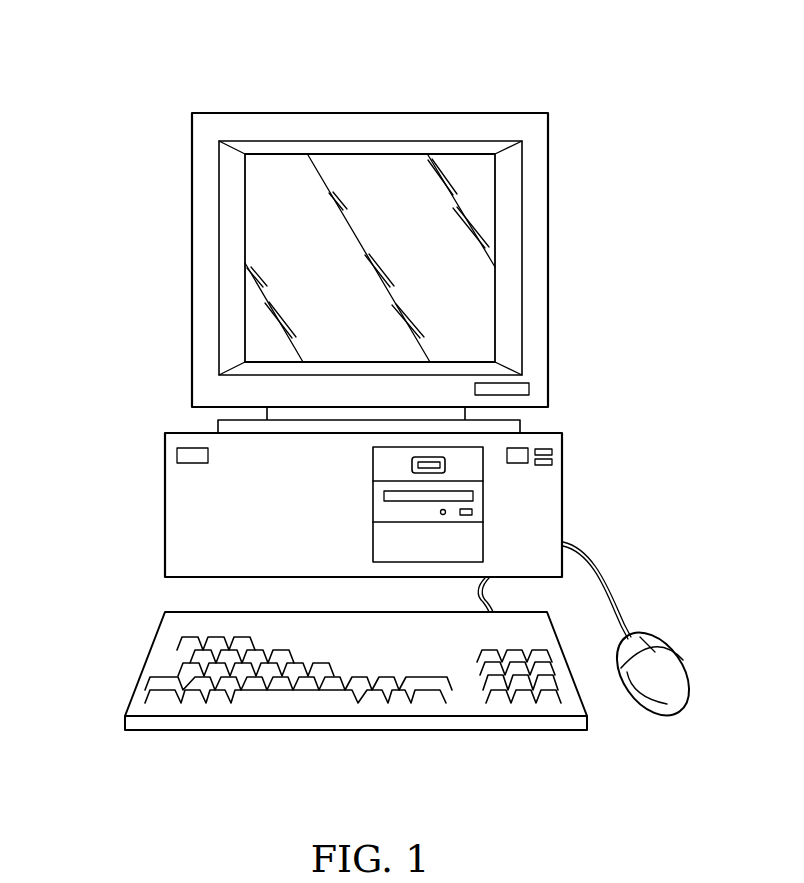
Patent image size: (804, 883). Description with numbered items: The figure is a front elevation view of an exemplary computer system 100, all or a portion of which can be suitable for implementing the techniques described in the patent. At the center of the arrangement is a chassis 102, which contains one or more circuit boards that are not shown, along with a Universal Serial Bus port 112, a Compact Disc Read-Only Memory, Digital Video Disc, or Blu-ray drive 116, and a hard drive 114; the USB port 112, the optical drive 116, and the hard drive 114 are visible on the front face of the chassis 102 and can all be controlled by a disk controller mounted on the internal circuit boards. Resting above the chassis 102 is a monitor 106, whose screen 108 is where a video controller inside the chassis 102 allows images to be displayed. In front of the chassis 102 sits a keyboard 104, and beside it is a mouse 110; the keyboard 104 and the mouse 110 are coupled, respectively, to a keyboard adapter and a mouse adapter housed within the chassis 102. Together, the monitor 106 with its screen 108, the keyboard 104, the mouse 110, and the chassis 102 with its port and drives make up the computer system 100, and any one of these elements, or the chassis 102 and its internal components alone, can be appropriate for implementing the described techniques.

The computer system 100 is at (542, 92).
The chassis 102 is at (165, 508).
The keyboard 104 is at (148, 656).
The monitor 106 is at (264, 112).
The screen 108 is at (290, 263).
The mouse 110 is at (672, 665).
The Universal Serial Bus (USB) port 112 is at (445, 460).
The hard drive 114 is at (475, 542).
The CD-ROM, DVD, or Blu-ray drive 116 is at (475, 502).